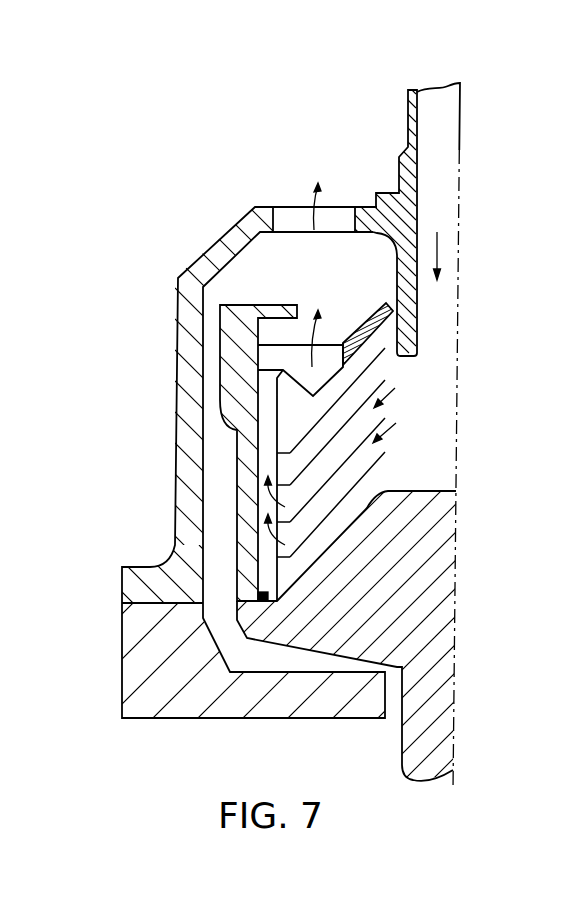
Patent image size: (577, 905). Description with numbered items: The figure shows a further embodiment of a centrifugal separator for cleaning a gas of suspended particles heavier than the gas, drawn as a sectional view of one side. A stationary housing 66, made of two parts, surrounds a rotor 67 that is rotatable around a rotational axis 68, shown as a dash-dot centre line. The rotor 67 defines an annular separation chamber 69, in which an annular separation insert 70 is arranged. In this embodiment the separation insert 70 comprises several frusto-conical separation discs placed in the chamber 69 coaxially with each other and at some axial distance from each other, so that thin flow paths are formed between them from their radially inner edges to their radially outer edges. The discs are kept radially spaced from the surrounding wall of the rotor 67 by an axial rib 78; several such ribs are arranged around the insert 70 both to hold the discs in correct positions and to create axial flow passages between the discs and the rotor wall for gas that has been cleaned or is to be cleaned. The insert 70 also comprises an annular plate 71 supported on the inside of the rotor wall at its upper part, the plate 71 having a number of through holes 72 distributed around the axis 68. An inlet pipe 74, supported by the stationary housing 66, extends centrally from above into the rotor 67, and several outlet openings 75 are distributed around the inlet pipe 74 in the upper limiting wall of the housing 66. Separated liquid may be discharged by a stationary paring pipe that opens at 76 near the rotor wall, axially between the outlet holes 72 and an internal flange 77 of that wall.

The stationary housing 66 is at (133, 579).
The rotor 67 is at (308, 633).
The rotational axis 68 is at (462, 140).
The annular separation chamber 69 is at (398, 443).
The separation insert 70 is at (327, 467).
The annular plate 71 is at (390, 312).
The through holes 72 is at (300, 360).
The inlet pipe 74 is at (412, 112).
The outlet openings 75 is at (290, 213).
The paring pipe opening 76 is at (275, 330).
The internal flange 77 is at (285, 305).
The axial rib 78 is at (267, 402).